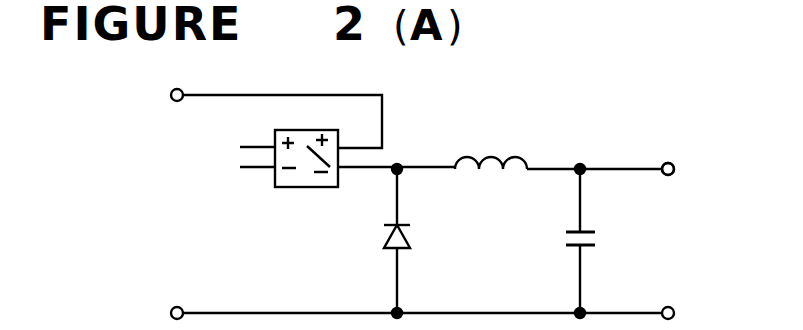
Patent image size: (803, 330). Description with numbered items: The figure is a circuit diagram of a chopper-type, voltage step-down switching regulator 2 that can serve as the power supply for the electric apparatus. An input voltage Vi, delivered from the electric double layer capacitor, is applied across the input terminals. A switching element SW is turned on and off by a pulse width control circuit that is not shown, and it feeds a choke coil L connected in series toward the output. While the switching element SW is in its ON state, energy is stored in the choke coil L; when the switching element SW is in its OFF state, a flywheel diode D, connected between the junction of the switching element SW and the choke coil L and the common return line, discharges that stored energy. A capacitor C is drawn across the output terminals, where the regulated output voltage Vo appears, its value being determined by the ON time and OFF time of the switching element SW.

The switching regulator 2 is at (676, 164).
The switching element SW is at (288, 187).
The flywheel diode D is at (410, 235).
The choke coil L is at (498, 152).
The capacitor C is at (563, 243).
The input voltage Vi is at (177, 102).
The output voltage Vo is at (668, 176).